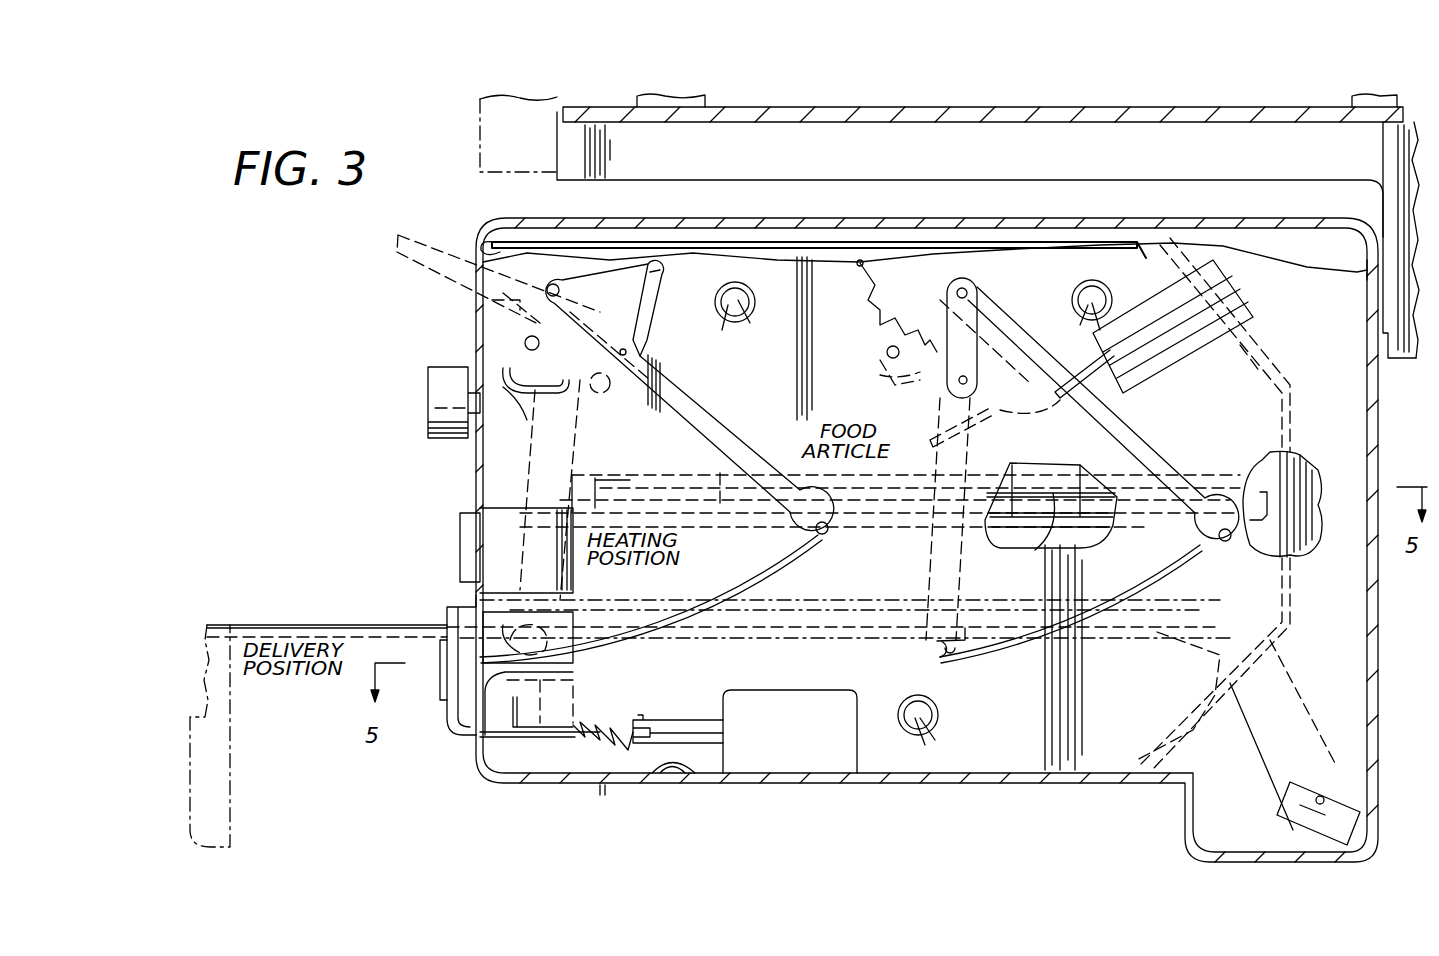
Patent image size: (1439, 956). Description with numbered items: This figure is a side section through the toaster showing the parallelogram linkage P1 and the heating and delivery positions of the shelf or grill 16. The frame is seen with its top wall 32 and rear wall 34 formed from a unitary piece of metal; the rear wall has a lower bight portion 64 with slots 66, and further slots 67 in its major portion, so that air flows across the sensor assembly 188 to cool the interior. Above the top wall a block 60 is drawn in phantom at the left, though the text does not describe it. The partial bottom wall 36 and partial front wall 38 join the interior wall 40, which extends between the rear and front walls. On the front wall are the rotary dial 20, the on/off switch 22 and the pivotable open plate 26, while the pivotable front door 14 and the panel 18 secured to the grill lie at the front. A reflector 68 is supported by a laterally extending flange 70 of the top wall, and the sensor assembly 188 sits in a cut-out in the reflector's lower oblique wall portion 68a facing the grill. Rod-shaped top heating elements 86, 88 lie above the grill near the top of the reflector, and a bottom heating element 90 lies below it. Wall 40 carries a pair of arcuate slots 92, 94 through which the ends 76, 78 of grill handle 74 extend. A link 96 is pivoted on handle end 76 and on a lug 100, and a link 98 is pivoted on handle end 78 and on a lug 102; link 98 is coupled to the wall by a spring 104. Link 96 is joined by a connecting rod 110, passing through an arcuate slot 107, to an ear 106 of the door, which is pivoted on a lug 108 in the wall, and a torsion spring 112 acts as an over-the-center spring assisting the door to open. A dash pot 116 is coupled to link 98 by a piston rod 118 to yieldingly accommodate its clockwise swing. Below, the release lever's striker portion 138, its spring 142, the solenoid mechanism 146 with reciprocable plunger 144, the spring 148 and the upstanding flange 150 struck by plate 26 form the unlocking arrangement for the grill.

The front door 14 is at (462, 235).
The shelf or grill 16 is at (697, 495).
The panel 18 is at (218, 830).
The rotary dial 20 is at (428, 382).
The on/off switch 22 is at (460, 522).
The pivotable plate 26 is at (455, 717).
The top wall 32 is at (1048, 218).
The rear wall 34 is at (1372, 440).
The partial bottom wall 36 is at (890, 784).
The partial front wall 38 is at (476, 343).
The interior wall 40 is at (1073, 733).
The lid block 60 is at (490, 129).
The lower bight portion 64 is at (1215, 858).
The slots 66 is at (1185, 810).
The slots 67 is at (1372, 417).
The reflector 68 is at (1005, 200).
The lower oblique wall portion 68a is at (1275, 655).
The laterally extending flange 70 is at (495, 252).
The side handle 74 is at (1035, 550).
The handle end 76 is at (832, 530).
The handle end 78 is at (1229, 542).
The top heating element 86 is at (724, 322).
The top heating element 88 is at (1102, 300).
The bottom heating element 90 is at (940, 708).
The arcuate slot 92 is at (762, 570).
The arcuate slot 94 is at (1118, 598).
The link 96 is at (697, 408).
The link 98 is at (1170, 478).
The lug 100 is at (556, 285).
The lug 102 is at (968, 290).
The spring 104 is at (885, 305).
The ear 106 is at (562, 390).
The arcuate slot 107 is at (533, 382).
The lug 108 is at (526, 341).
The connecting rod 110 is at (666, 272).
The torsion spring 112 is at (606, 396).
The dash pot 116 is at (1222, 302).
The piston rod 118 is at (1085, 355).
The striker portion 138 is at (520, 653).
The spring 142 is at (628, 750).
The reciprocable plunger 144 is at (717, 700).
The solenoid mechanism 146 is at (800, 703).
The spring 148 is at (618, 718).
The upstanding flange 150 is at (492, 775).
The sensor assembly 188 is at (1305, 752).
The parallelogram linkage P1 is at (829, 282).